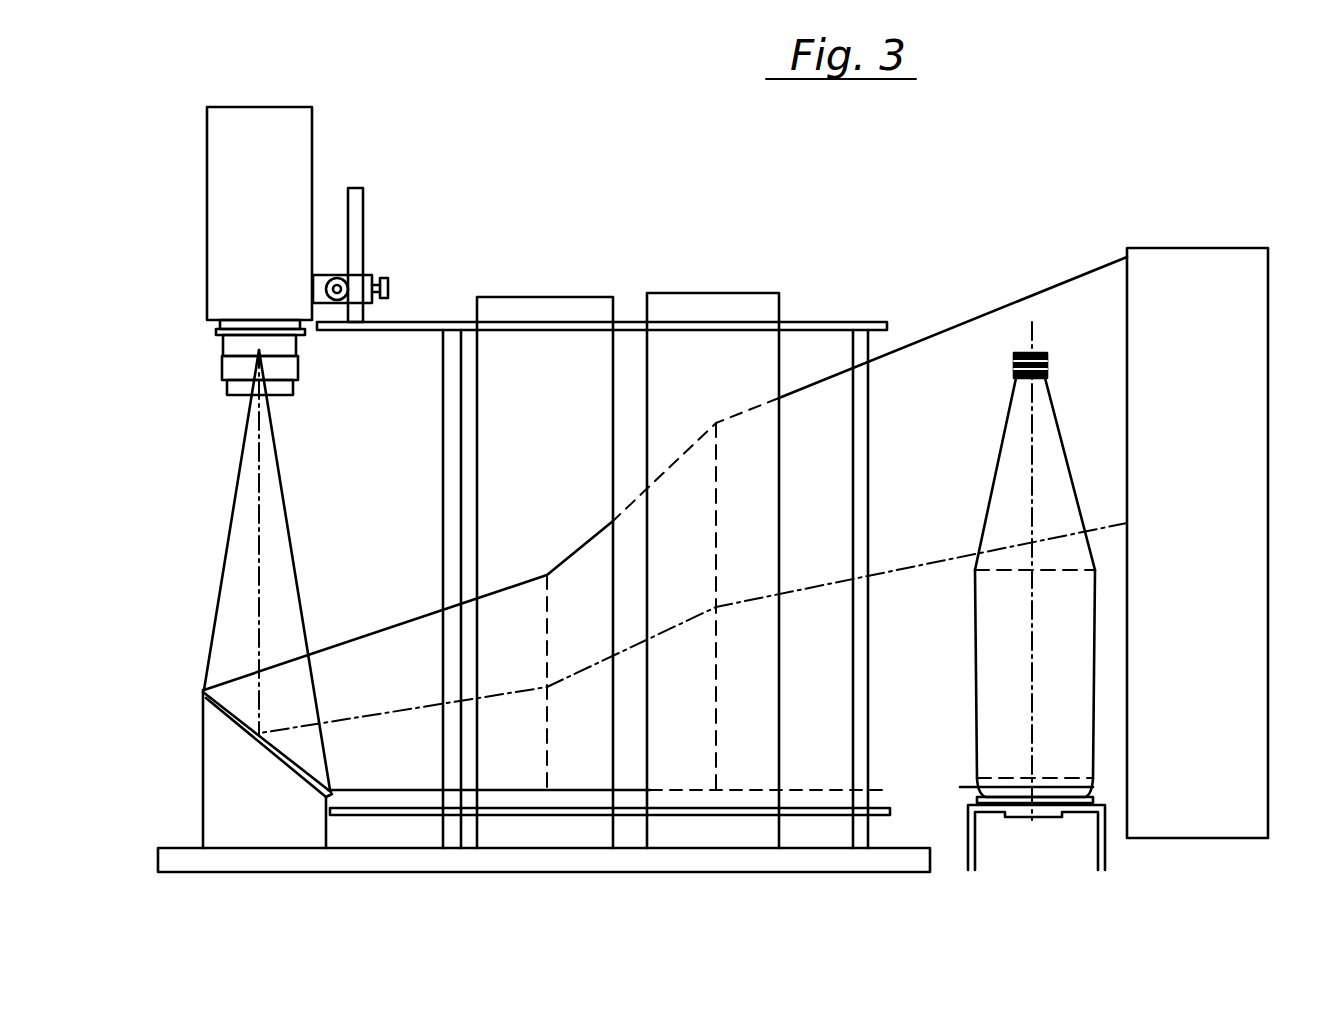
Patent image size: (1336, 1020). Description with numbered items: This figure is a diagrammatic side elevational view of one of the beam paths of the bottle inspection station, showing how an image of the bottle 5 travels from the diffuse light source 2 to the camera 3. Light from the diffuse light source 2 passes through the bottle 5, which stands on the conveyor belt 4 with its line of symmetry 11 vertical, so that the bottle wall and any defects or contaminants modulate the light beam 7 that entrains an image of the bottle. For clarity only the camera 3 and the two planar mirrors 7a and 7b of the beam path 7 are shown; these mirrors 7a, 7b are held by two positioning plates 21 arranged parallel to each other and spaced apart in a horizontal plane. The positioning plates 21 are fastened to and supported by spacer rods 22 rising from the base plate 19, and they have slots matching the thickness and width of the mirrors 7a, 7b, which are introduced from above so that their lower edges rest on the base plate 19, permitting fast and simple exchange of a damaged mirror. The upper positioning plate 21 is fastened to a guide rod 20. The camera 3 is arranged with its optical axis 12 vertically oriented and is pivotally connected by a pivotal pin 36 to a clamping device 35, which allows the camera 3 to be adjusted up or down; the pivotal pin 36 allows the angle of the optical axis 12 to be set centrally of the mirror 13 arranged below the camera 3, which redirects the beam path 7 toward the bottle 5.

The diffuse light source 2 is at (1190, 305).
The camera 3 is at (269, 223).
The conveyor belt 4 is at (1082, 783).
The bottle 5 is at (1060, 512).
The light beam 7 is at (963, 340).
The mirror 7a is at (526, 355).
The mirror 7b is at (708, 350).
The line of symmetry 11 is at (1036, 441).
The optical axis 12 is at (259, 507).
The mirror 13 is at (248, 724).
The base plate 19 is at (262, 858).
The guide rod 20 is at (356, 233).
The positioning plates 21 is at (803, 323).
The spacer rods 22 is at (860, 345).
The clamping device 35 is at (384, 290).
The pivotal pin 36 is at (365, 277).